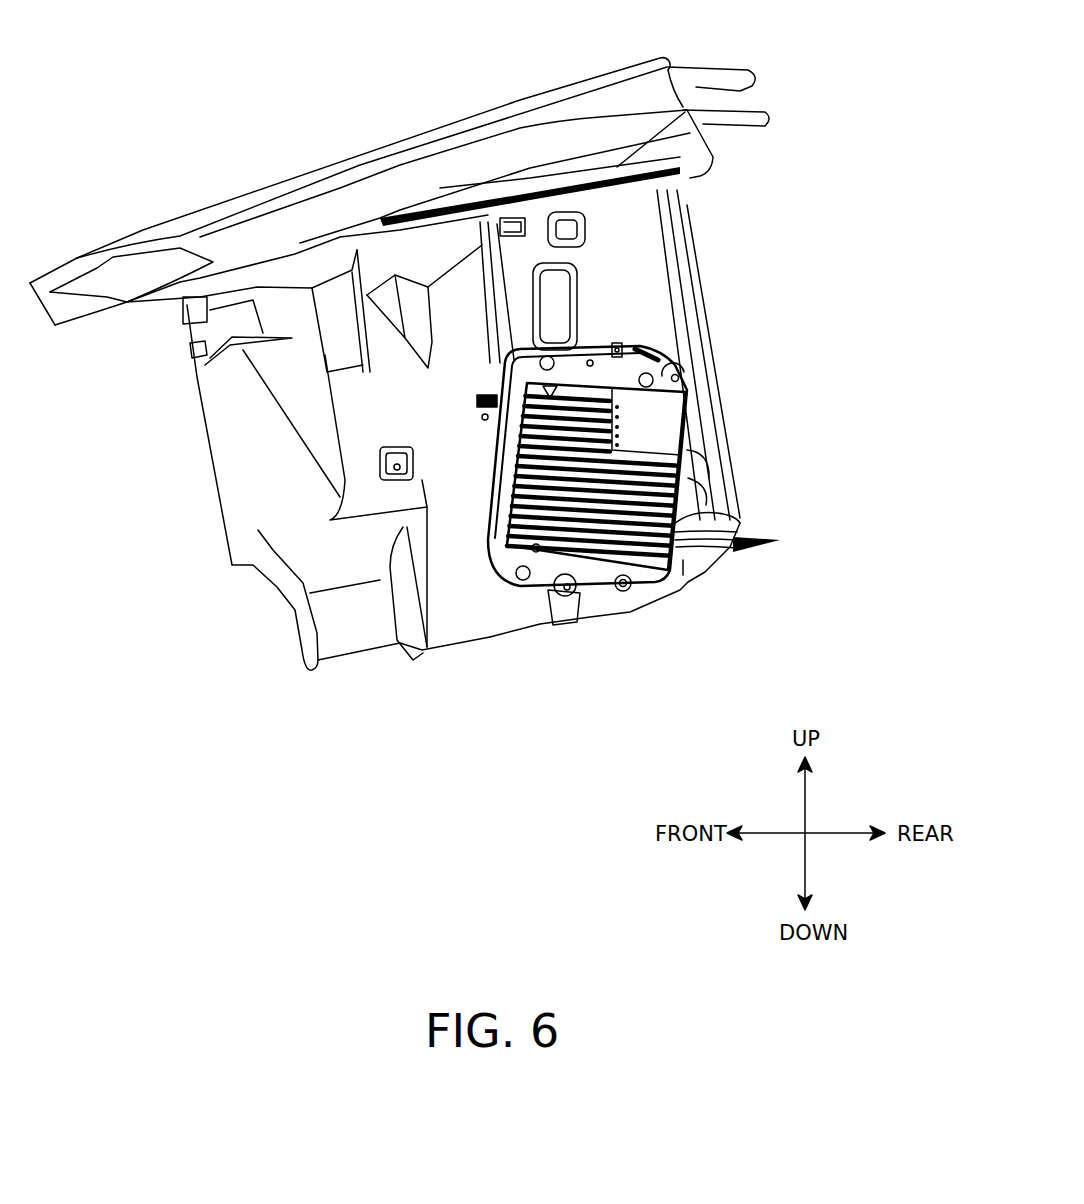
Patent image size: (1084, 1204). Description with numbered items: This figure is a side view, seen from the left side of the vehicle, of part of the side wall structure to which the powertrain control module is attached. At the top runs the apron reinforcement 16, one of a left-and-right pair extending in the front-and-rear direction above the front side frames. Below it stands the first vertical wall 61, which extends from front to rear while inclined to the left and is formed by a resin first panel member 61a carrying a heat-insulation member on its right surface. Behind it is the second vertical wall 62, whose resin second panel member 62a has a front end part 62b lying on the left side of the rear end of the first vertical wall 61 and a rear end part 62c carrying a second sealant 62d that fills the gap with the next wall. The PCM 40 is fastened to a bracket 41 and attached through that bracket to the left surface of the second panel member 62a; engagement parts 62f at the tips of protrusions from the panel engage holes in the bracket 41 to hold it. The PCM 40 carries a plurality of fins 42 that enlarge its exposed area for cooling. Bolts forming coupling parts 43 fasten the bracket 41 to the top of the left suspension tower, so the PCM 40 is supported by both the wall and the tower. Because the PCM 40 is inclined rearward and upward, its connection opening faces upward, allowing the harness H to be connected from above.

The apron reinforcement 16 is at (428, 165).
The PCM (Powertrain Control Module) 40 is at (591, 584).
The bracket 41 is at (520, 369).
The fins 42 is at (745, 538).
The coupling part 43 is at (480, 410).
The first vertical wall 61 is at (291, 457).
The first panel member 61a is at (225, 457).
The second vertical wall 62 is at (593, 378).
The second panel member 62a is at (603, 218).
The front end part 62b is at (563, 600).
The rear end part 62c is at (686, 210).
The second sealant 62d is at (692, 264).
The engagement part 62f is at (708, 382).
The harness H is at (714, 506).